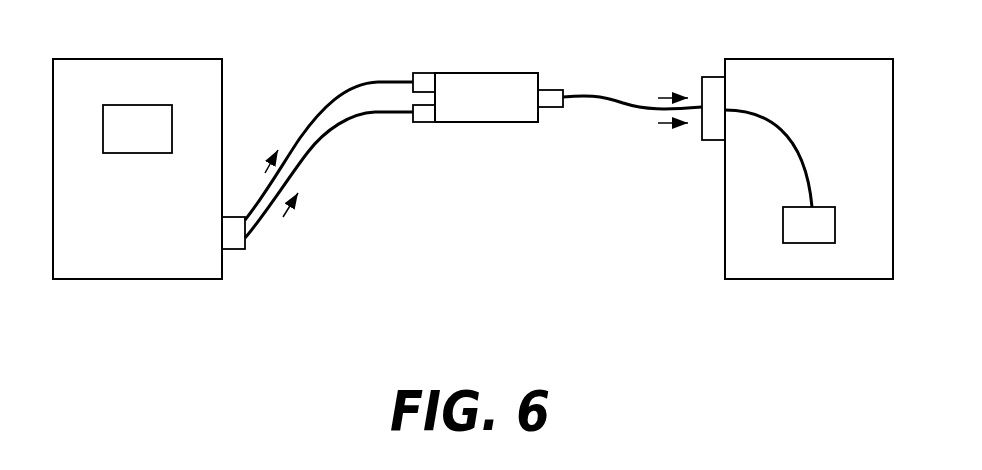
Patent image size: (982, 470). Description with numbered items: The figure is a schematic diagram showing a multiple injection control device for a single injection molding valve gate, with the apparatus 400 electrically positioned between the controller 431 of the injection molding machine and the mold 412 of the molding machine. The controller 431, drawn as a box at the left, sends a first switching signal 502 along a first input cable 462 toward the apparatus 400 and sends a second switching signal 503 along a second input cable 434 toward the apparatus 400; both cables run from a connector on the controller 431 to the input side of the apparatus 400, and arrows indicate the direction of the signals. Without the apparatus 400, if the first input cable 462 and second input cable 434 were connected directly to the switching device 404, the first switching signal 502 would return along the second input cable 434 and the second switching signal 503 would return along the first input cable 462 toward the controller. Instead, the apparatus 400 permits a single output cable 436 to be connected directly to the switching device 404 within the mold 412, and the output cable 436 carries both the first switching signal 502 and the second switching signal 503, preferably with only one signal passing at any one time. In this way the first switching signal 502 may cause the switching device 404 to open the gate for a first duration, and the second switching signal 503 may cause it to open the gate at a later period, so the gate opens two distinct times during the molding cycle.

The controller 431 is at (132, 59).
The first input cable 462 is at (360, 85).
The second input cable 434 is at (345, 125).
The apparatus 400 is at (483, 73).
The output cable 436 is at (580, 93).
The mold 412 is at (787, 59).
The switching device 404 is at (817, 207).
The first switching signal 502 is at (268, 170).
The second switching signal 503 is at (283, 217).